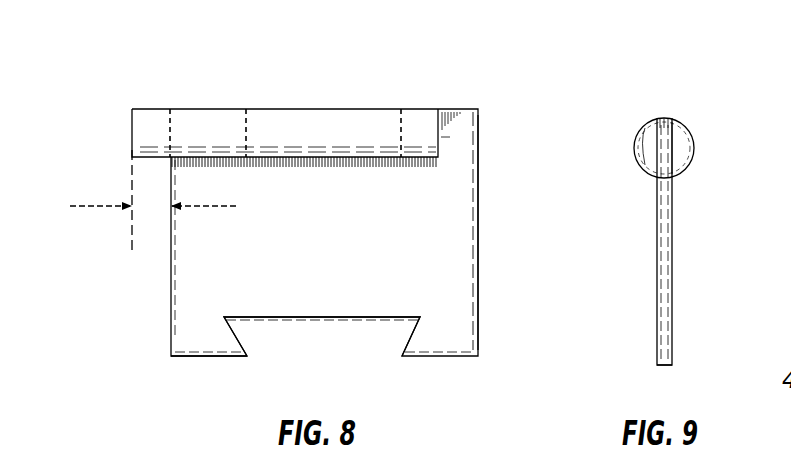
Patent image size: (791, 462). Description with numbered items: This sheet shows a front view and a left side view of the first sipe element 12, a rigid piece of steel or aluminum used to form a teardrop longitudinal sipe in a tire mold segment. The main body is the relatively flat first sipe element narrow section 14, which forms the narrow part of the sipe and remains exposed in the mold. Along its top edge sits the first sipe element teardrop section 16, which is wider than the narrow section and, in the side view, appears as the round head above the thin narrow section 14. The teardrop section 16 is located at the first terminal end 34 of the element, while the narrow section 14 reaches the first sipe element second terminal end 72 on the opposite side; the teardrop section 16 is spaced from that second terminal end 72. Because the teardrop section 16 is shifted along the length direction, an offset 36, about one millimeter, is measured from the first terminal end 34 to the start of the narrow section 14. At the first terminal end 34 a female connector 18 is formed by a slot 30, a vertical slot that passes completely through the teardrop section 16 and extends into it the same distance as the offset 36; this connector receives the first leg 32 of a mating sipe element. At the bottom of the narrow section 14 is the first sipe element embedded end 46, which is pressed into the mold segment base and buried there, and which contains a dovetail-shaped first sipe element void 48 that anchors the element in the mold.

In FIG. 8, the first sipe element 12 is at (118, 62).
In FIG. 9, the first sipe element 12 is at (600, 62).
In FIG. 8, the first sipe element narrow section 14 is at (462, 210).
In FIG. 9, the first sipe element narrow section 14 is at (671, 275).
In FIG. 8, the first sipe element teardrop section 16 is at (305, 118).
In FIG. 9, the first sipe element teardrop section 16 is at (675, 129).
In FIG. 8, the female connector 18 is at (132, 145).
In FIG. 9, the female connector 18 is at (634, 148).
In FIG. 9, the slot 30 is at (660, 118).
In FIG. 8, the first leg 32 is at (122, 120).
In FIG. 9, the first terminal end 34 is at (680, 167).
In FIG. 8, the offset 36 is at (101, 207).
In FIG. 8, the first sipe element embedded end 46 is at (203, 345).
In FIG. 9, the first sipe element embedded end 46 is at (655, 348).
In FIG. 8, the first sipe element void 48 is at (327, 349).
In FIG. 8, the first sipe element second terminal end 72 is at (480, 272).